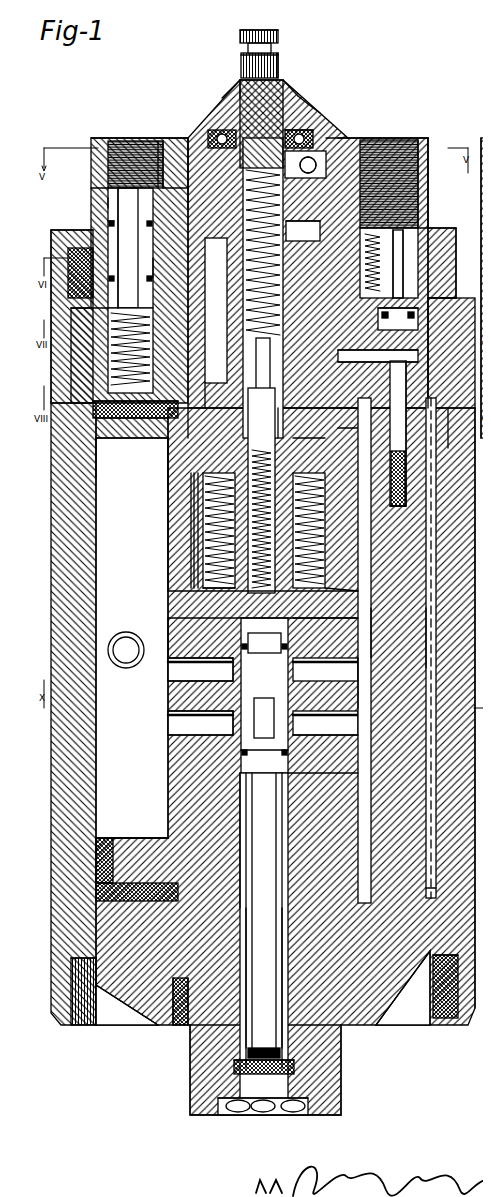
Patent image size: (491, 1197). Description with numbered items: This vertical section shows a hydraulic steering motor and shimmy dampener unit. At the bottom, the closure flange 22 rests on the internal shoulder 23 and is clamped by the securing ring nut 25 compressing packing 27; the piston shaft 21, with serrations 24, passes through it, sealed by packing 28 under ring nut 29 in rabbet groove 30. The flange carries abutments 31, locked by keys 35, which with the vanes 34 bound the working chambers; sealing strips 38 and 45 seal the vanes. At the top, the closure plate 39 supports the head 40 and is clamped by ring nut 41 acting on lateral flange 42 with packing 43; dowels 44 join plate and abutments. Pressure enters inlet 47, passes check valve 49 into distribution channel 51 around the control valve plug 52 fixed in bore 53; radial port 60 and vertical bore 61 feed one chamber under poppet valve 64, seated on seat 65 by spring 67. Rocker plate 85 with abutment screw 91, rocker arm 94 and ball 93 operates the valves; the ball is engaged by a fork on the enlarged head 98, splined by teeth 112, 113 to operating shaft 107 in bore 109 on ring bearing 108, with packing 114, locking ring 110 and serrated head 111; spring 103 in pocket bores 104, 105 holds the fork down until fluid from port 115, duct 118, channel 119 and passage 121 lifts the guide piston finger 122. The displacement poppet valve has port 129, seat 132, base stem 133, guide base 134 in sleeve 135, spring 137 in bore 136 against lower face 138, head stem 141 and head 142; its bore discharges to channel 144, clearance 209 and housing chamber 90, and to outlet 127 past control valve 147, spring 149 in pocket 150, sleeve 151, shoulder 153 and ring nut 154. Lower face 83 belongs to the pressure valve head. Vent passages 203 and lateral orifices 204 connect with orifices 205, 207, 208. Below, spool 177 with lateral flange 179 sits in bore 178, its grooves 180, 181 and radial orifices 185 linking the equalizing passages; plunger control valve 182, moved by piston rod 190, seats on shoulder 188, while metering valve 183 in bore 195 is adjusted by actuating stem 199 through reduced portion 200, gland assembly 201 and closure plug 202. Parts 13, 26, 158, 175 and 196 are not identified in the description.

The serrated head 111 is at (244, 50).
The operating shaft 107 is at (272, 56).
The split locking ring 110 is at (278, 70).
The packing 114 is at (282, 78).
The coiled expansion spring 103 is at (292, 90).
The axial spring pocket bore 104 is at (296, 100).
The spring pocket bore 105 is at (234, 80).
The axial bore 109 is at (226, 100).
The enlarged head 98 is at (208, 140).
The ring bearing 108 is at (302, 122).
The tilting ball 93 is at (322, 130).
The rocker arm 94 is at (365, 132).
The rocker plate 85 is at (402, 130).
The clearance 209 is at (383, 132).
The inlet 47 is at (420, 136).
The head structure 40 is at (474, 134).
The cylindrical head 142 is at (150, 133).
The ring nut 154 is at (132, 133).
The housing chamber 90 is at (165, 140).
The displacement fluid outlet 127 is at (105, 132).
The outwardly facing shoulder 153 is at (92, 178).
The sleeve 151 is at (98, 192).
The automatic control valve 147 is at (100, 215).
The coiled expansion spring 149 is at (62, 232).
The ring nut 41 is at (62, 224).
The displacement fluid channel 144 is at (415, 182).
The lower face 83 is at (376, 230).
The annular distribution channel 119 is at (396, 230).
The small port 115 is at (390, 240).
The spline teeth 113 is at (300, 165).
The spline teeth 112 is at (303, 229).
The lead off duct 118 is at (259, 276).
The valve seat 132 is at (147, 258).
The abutment screw 91 is at (243, 252).
The axial pocket 150 is at (70, 312).
The packing 43 is at (452, 300).
The lateral flange 42 is at (445, 322).
The check valve 49 is at (398, 296).
The guide piston finger 122 is at (378, 357).
The radial port 60 is at (378, 360).
The lateral orifices 204 is at (197, 398).
The axial passage 121 is at (178, 424).
The annular distribution channel 51 is at (118, 420).
The wall 158 is at (88, 440).
The head stem 141 is at (175, 440).
The displacement fluid port 129 is at (165, 460).
The base stem portion 133 is at (196, 481).
The guide base 134 is at (188, 500).
The axial passages 203 is at (189, 510).
The lower face 138 is at (186, 525).
The axial bore 53 is at (184, 540).
The sleeve 135 is at (184, 555).
The control valve plug 52 is at (196, 570).
The orifices 208 is at (200, 582).
The coiled compression spring 137 is at (205, 598).
The axial bore 136 is at (126, 641).
The orifices 207 is at (160, 625).
The vanes 34 is at (116, 561).
The control valve 64 is at (287, 423).
The axial bore 195 is at (150, 781).
The vertical bore 61 is at (348, 413).
The seat 65 is at (348, 426).
The connecting pins 44 is at (364, 650).
The closure plate 39 is at (442, 440).
The coiled expansion spring 67 is at (382, 530).
The lateral flange 179 is at (400, 560).
The orifices 205 is at (372, 575).
The reduced diameter bore 178 is at (362, 610).
The passage 175 is at (400, 630).
The abutment members 31 is at (422, 640).
The keys 35 is at (382, 662).
The plunger control valve 182 is at (200, 662).
The annular groove 180 is at (220, 668).
The radial orifices 185 is at (205, 690).
The shoulder 188 is at (210, 712).
The annular groove 181 is at (225, 726).
The metering valve 183 is at (235, 740).
The spool 177 is at (245, 752).
The piston rod 190 is at (372, 742).
The block 196 is at (352, 755).
The bore 26 is at (352, 790).
The housing 13 is at (462, 823).
The sealing strips 38 is at (100, 834).
The sealing strips 45 is at (150, 880).
The packing 27 is at (452, 884).
The internal shoulder 23 is at (448, 950).
The securing ring nut 25 is at (74, 1005).
The bottom closure flange 22 is at (133, 975).
The packing 28 is at (167, 992).
The ring nut 29 is at (170, 1012).
The longitudinal serrations 24 is at (182, 1090).
The reduced diameter portion 200 is at (282, 1000).
The actuating stem 199 is at (290, 1045).
The rabbet groove 30 is at (378, 1015).
The piston shaft 21 is at (325, 1080).
The retainer and packing gland assembly 201 is at (290, 1068).
The closure plug 202 is at (258, 1104).